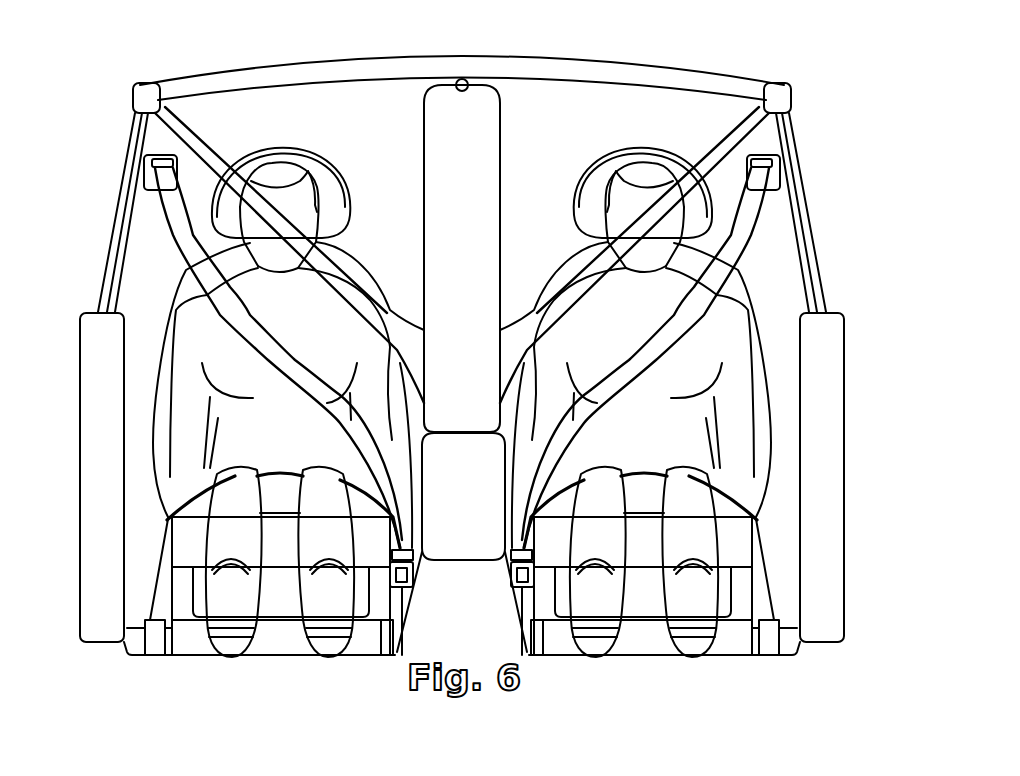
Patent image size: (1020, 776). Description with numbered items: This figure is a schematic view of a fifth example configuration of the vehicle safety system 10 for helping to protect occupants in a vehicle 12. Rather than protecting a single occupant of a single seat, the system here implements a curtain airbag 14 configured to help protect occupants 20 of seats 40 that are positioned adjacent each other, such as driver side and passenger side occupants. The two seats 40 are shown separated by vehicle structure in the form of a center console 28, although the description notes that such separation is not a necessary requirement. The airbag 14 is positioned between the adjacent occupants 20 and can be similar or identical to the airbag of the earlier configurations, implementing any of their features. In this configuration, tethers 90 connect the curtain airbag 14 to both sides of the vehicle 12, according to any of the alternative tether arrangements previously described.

The vehicle safety system 10 is at (165, 49).
The vehicle 12 is at (707, 49).
The curtain airbag 14 is at (453, 192).
The occupant 20 is at (213, 330).
The center console 28 is at (463, 476).
The seat 40 is at (185, 537).
The tether 90 is at (198, 147).